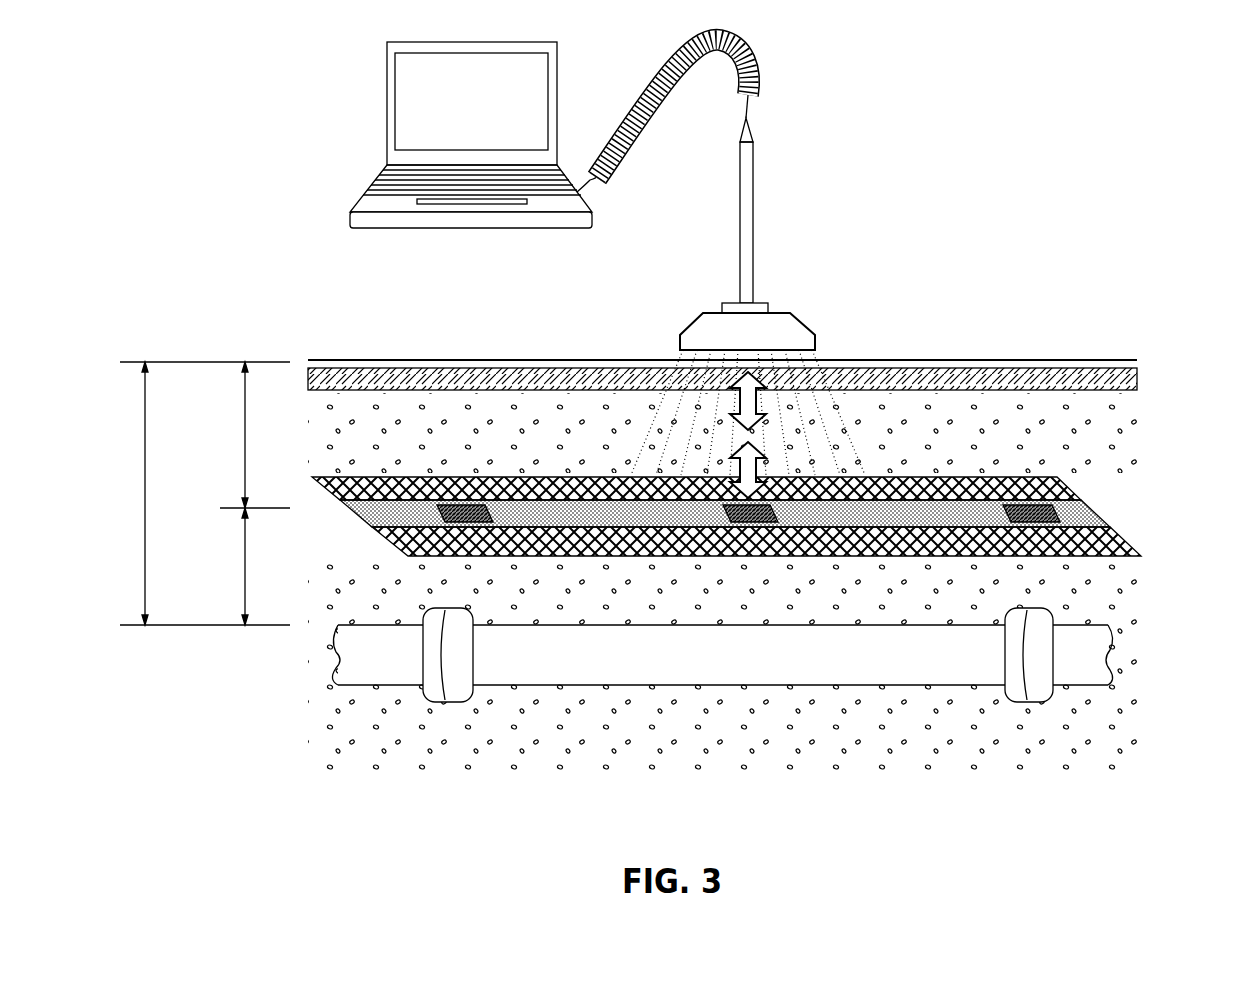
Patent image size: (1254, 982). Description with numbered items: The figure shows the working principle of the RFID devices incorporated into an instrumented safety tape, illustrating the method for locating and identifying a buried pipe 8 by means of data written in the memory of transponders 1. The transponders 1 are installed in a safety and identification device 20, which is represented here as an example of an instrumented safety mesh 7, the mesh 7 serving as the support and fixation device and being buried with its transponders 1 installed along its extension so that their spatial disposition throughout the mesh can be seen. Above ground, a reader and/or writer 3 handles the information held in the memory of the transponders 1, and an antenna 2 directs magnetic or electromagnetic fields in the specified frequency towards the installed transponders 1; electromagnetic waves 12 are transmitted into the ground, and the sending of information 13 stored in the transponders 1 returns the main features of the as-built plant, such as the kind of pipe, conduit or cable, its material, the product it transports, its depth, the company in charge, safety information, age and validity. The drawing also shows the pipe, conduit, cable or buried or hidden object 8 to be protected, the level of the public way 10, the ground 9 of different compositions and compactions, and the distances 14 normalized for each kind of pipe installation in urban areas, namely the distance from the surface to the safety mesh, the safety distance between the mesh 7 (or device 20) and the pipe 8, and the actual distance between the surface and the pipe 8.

The transponders 1 is at (493, 522).
The antenna 2 is at (802, 313).
The reader and/or writer 3 is at (387, 140).
The instrumented safety mesh 7 is at (380, 513).
The buried pipe 8 is at (1092, 673).
The ground 9 is at (1043, 432).
The level of the public way 10 is at (380, 360).
The electromagnetic waves 12 is at (657, 403).
The sending of information 13 is at (766, 470).
The distances 14 is at (185, 362).
The safety and identification device 20 is at (742, 610).